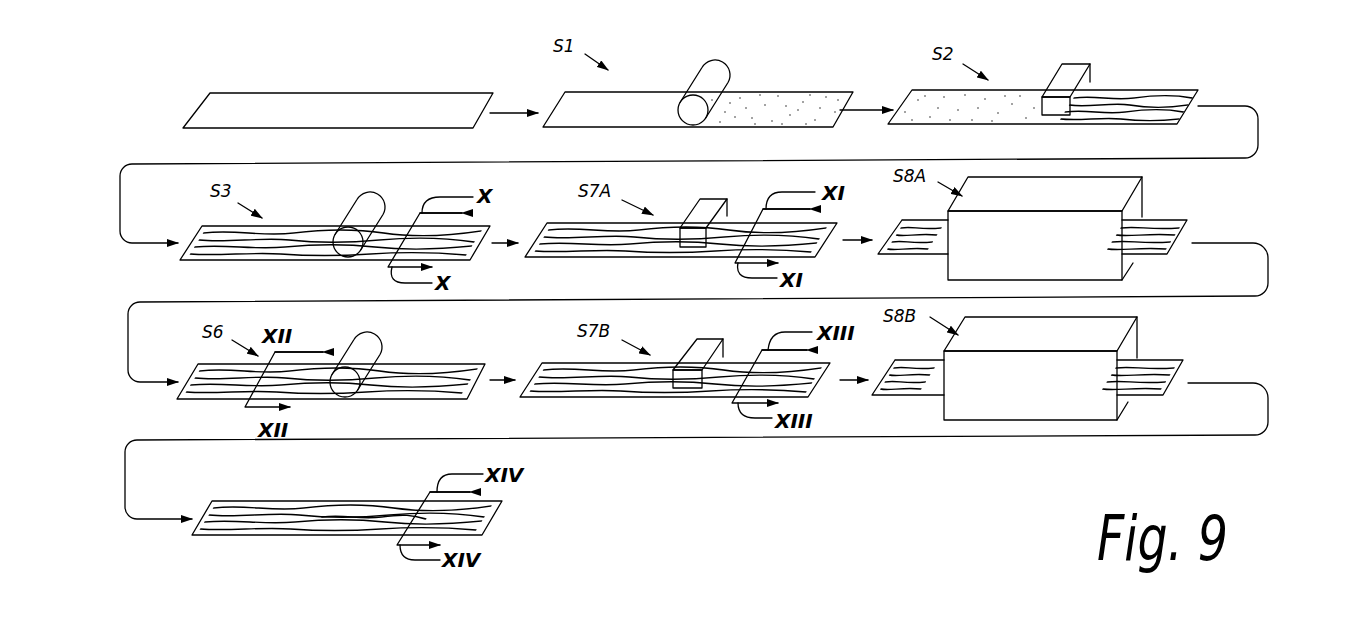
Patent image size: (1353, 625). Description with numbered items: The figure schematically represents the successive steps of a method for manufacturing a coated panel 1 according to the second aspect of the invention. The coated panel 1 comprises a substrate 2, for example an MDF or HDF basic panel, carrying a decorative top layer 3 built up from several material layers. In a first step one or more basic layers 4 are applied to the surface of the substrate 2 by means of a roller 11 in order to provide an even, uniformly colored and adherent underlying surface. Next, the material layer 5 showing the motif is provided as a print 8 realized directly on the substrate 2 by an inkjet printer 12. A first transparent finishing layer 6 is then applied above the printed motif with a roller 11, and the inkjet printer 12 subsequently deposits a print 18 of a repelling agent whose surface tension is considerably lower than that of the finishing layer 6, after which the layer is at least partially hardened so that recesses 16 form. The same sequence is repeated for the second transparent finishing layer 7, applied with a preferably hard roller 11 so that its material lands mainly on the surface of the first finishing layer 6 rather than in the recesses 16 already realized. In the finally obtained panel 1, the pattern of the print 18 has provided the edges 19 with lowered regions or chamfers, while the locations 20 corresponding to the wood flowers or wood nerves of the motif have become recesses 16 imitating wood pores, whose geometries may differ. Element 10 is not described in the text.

The coated panel 1 is at (320, 492).
The substrate 2 is at (324, 92).
The decorative top layer 3 is at (498, 519).
The basic layer 4 is at (912, 95).
The material layer with motif 5 is at (1126, 90).
The first transparent finishing layer 6 is at (397, 235).
The second transparent finishing layer 7 is at (901, 222).
The print 8 is at (1040, 84).
The blank sheet 10 is at (375, 110).
The roller 11 is at (703, 80).
The inkjet printer 12 is at (1085, 68).
The recesses 16 is at (1153, 222).
The print with repelling agent 18 is at (800, 260).
The edges of the panel 19 is at (392, 500).
The locations in the surface of the panel 20 is at (284, 507).